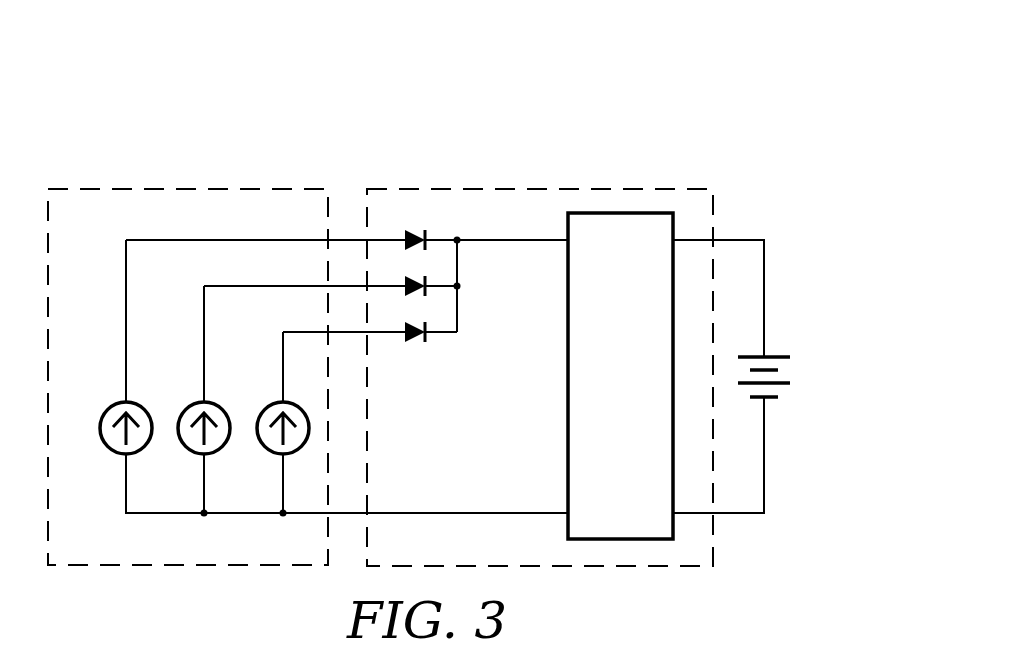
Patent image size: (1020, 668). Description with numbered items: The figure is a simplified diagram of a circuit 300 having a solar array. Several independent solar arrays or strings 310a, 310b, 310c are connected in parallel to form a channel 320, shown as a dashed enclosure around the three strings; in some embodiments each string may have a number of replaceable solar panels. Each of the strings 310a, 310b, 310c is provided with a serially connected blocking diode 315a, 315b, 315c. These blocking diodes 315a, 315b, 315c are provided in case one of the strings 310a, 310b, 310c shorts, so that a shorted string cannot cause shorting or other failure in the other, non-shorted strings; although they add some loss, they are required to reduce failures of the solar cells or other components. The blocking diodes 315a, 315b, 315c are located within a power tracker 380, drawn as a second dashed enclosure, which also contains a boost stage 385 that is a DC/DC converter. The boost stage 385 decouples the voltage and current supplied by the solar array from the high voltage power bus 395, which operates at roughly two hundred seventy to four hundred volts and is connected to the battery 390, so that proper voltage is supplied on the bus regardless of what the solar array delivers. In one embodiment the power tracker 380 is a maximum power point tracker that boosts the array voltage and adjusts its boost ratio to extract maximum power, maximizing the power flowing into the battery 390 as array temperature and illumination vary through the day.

The circuit 300 is at (255, 145).
The solar array string 310a is at (106, 412).
The solar array string 310b is at (184, 412).
The solar array string 310c is at (262, 412).
The blocking diode 315a is at (411, 229).
The blocking diode 315b is at (411, 275).
The blocking diode 315c is at (411, 321).
The channel 320 is at (87, 189).
The power tracker 380 is at (407, 189).
The boost stage 385 is at (643, 383).
The battery 390 is at (778, 370).
The high voltage power bus 395 is at (746, 240).